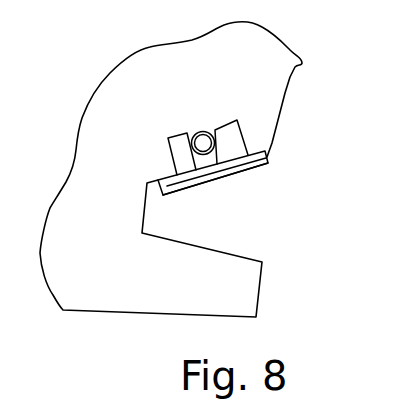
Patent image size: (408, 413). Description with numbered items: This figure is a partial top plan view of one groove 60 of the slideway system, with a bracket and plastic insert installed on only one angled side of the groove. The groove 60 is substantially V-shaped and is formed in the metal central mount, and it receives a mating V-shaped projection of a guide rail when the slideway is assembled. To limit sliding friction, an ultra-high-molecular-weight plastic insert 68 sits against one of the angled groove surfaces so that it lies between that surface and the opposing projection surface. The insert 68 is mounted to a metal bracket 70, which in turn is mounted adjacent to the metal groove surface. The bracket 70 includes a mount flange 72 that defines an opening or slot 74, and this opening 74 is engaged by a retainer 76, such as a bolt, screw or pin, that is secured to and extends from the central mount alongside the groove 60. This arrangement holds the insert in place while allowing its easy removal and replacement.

The groove 60 is at (270, 221).
The ultra-high-molecular-weight plastic insert 68 is at (257, 167).
The metal bracket 70 is at (268, 155).
The mount flange 72 is at (235, 143).
The opening 74 is at (172, 156).
The retainer 76 is at (203, 131).